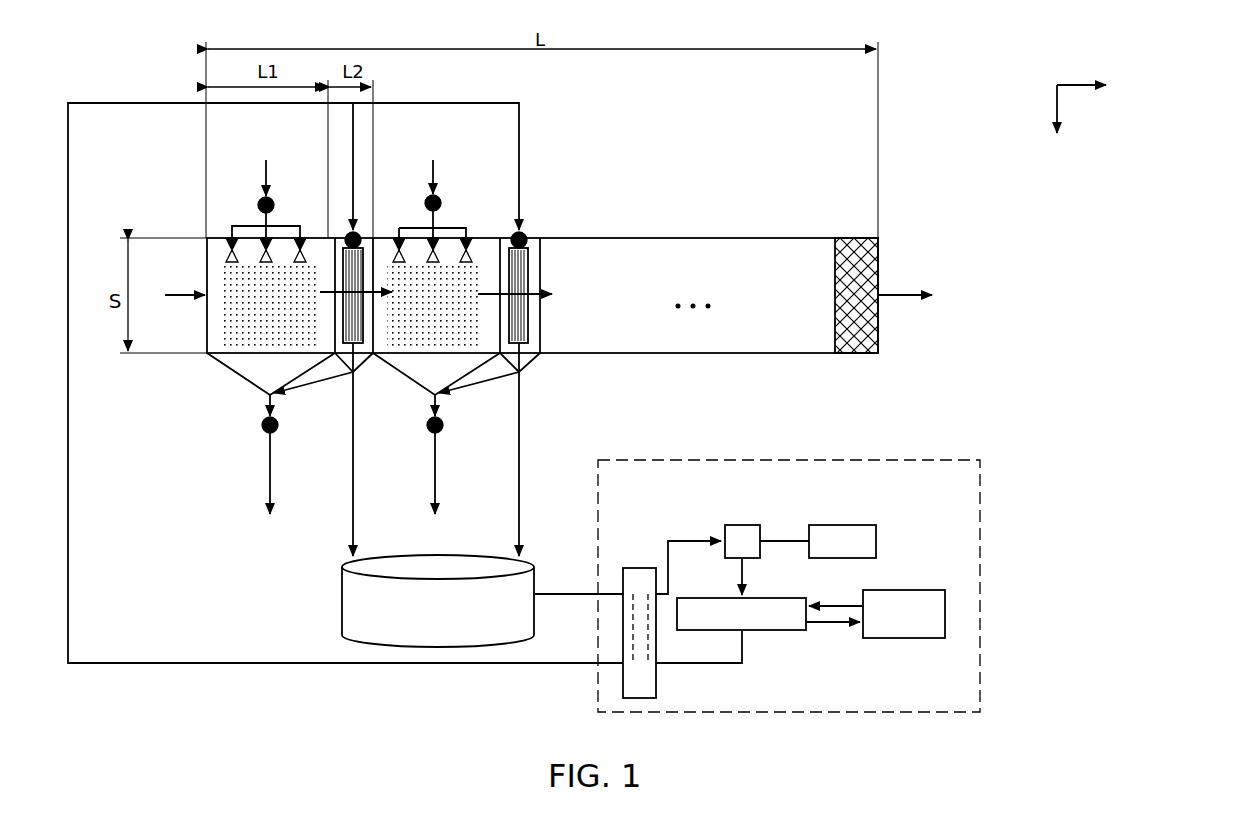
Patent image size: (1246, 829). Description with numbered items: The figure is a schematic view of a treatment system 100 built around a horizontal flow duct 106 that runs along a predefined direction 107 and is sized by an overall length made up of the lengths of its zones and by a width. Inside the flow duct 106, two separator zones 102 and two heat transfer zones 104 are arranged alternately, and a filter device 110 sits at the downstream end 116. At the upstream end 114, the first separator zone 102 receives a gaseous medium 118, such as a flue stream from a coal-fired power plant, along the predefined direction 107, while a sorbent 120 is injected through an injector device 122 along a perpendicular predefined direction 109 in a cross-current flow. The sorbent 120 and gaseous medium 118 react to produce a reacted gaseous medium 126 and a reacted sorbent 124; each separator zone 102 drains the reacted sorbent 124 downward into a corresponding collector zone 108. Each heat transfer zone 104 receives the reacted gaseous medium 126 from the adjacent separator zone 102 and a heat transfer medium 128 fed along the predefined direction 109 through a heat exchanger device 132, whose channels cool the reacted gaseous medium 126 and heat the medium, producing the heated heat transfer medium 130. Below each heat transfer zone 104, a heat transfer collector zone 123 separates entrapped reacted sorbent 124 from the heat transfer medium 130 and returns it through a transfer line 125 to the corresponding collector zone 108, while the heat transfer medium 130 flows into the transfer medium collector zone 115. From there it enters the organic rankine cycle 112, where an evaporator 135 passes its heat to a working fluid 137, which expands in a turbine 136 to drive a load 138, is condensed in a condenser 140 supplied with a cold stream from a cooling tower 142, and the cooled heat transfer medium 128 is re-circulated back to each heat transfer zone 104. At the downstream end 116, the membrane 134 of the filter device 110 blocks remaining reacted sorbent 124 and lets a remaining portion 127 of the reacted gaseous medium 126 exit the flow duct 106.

The treatment system 100 is at (1122, 722).
The separator zone 102 is at (245, 325).
The heat transfer zone 104 is at (337, 270).
The flow duct 106 is at (702, 237).
The predefined direction 107 is at (1062, 85).
The collector zone 108 is at (240, 372).
The predefined direction 109 is at (1057, 100).
The filter device 110 is at (850, 355).
The organic rankine cycle 112 is at (982, 535).
The upstream end 114 is at (196, 272).
The transfer medium collector zone 115 is at (340, 600).
The downstream end 116 is at (900, 330).
The gaseous medium 118 is at (185, 292).
The sorbent 120 is at (265, 172).
The injector device 122 is at (230, 258).
The heat transfer collector zone 123 is at (356, 372).
The reacted sorbent 124 is at (265, 405).
The transfer line 125 is at (312, 388).
The reacted gaseous medium 126 is at (332, 297).
The remaining portion 127 is at (914, 292).
The heat transfer medium 128 is at (351, 112).
The heat transfer medium 130 is at (351, 508).
The heat exchanger device 132 is at (356, 250).
The membrane 134 is at (870, 355).
The evaporator 135 is at (638, 568).
The turbine 136 is at (742, 525).
The working fluid 137 is at (678, 541).
The load 138 is at (843, 525).
The condenser 140 is at (792, 630).
The cooling tower 142 is at (903, 638).